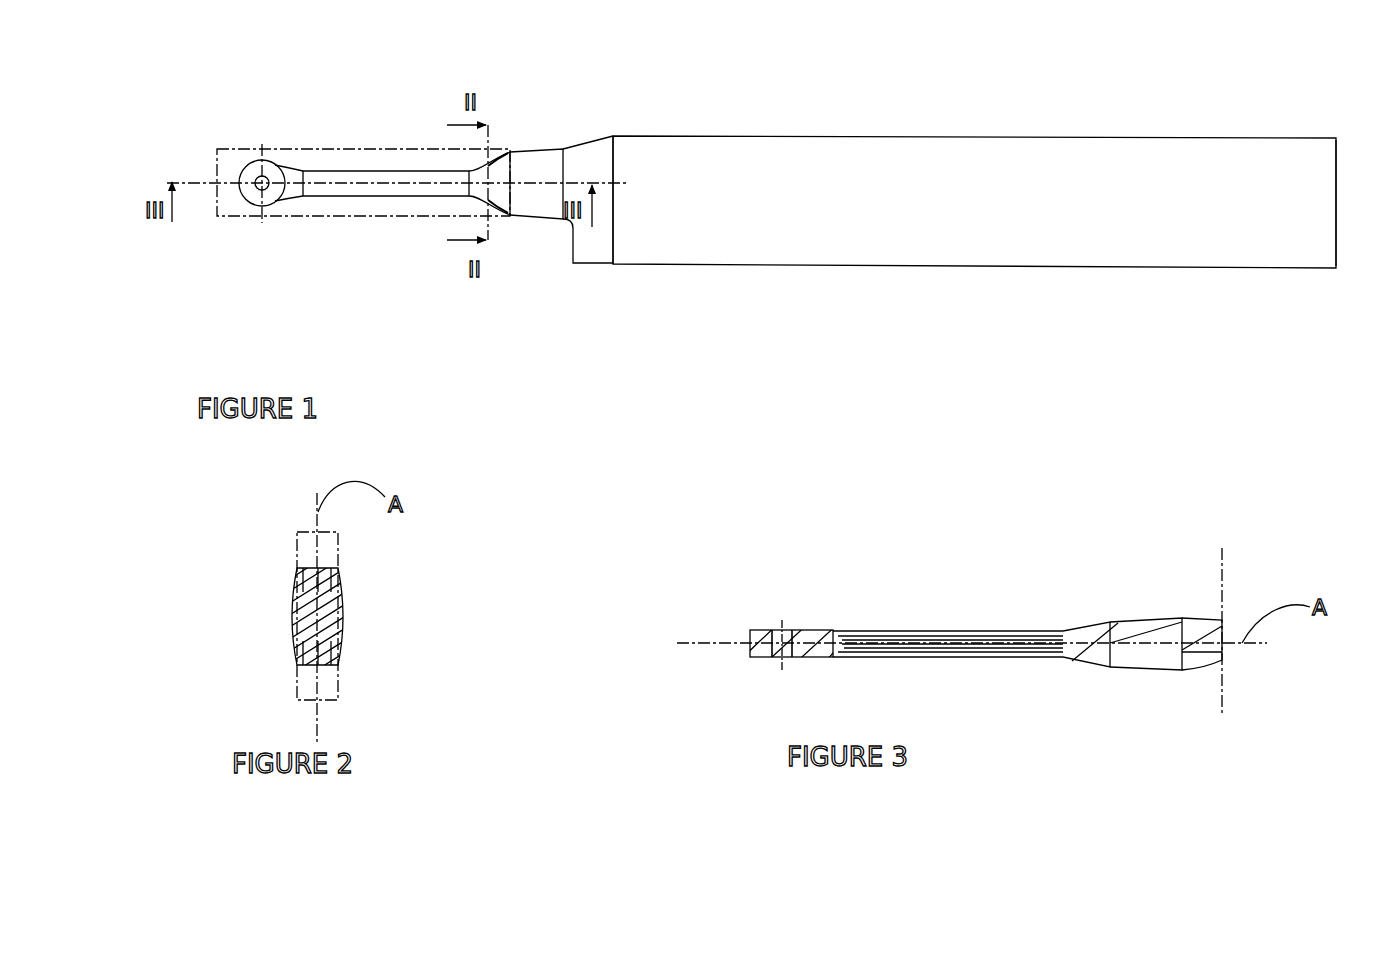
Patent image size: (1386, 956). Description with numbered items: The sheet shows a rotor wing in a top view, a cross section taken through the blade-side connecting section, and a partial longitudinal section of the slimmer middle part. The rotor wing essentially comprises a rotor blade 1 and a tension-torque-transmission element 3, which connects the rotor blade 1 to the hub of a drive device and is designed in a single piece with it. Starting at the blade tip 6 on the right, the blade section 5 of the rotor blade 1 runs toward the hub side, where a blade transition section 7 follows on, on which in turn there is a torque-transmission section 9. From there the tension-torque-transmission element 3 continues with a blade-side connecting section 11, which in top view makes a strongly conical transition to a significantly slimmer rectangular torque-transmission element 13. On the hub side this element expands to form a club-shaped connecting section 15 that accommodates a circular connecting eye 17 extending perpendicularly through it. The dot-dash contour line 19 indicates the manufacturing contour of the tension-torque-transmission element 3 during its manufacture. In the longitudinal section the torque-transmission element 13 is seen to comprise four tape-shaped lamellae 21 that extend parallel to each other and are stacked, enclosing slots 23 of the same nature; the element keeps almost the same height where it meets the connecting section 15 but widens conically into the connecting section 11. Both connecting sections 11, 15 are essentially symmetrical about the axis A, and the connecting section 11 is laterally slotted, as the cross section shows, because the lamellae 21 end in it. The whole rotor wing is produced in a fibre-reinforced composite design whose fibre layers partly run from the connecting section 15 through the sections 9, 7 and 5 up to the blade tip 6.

In FIG. 1, the rotor blade 1 is at (864, 112).
In FIG. 1, the tension-torque-transmission element 3 is at (346, 234).
In FIG. 1, the blade section 5 is at (988, 217).
In FIG. 1, the blade tip 6 is at (1336, 200).
In FIG. 1, the blade transition section 7 is at (597, 140).
In FIG. 3, the blade transition section 7 is at (1200, 633).
In FIG. 1, the torque-transmission section 9 is at (528, 167).
In FIG. 3, the torque-transmission section 9 is at (1135, 632).
In FIG. 1, the blade-side connecting section 11 is at (497, 175).
In FIG. 2, the blade-side connecting section 11 is at (336, 578).
In FIG. 3, the blade-side connecting section 11 is at (1082, 630).
In FIG. 1, the torque-transmission element 13 is at (366, 177).
In FIG. 3, the torque-transmission element 13 is at (860, 619).
In FIG. 1, the club-shaped connecting section 15 is at (290, 187).
In FIG. 3, the club-shaped connecting section 15 is at (752, 637).
In FIG. 1, the connecting eye 17 is at (257, 185).
In FIG. 3, the connecting eye 17 is at (783, 636).
In FIG. 1, the contour line 19 is at (218, 150).
In FIG. 2, the lamellae 21 is at (336, 660).
In FIG. 3, the lamellae 21 is at (935, 637).
In FIG. 3, the slots 23 is at (943, 633).